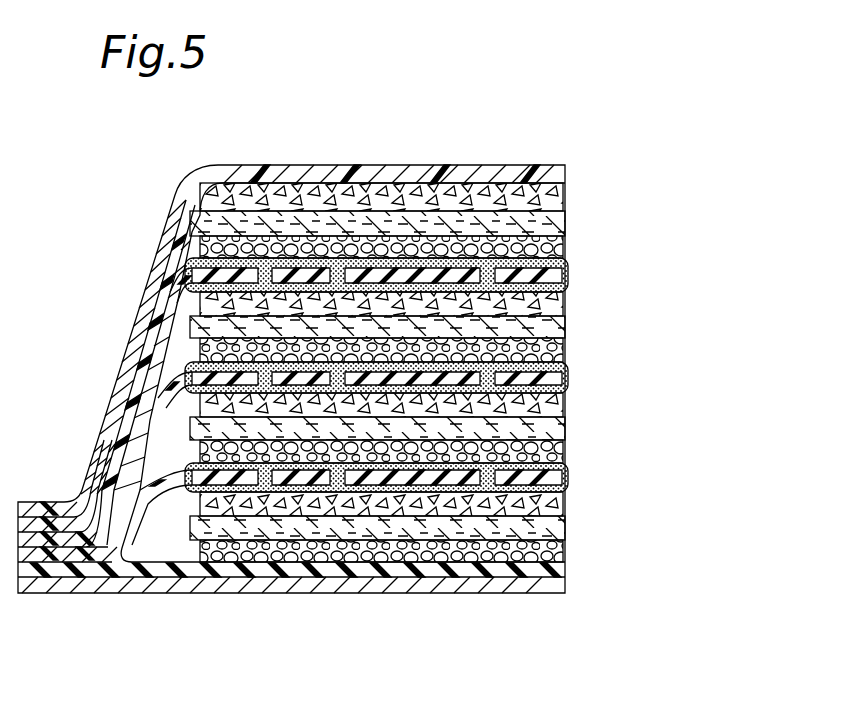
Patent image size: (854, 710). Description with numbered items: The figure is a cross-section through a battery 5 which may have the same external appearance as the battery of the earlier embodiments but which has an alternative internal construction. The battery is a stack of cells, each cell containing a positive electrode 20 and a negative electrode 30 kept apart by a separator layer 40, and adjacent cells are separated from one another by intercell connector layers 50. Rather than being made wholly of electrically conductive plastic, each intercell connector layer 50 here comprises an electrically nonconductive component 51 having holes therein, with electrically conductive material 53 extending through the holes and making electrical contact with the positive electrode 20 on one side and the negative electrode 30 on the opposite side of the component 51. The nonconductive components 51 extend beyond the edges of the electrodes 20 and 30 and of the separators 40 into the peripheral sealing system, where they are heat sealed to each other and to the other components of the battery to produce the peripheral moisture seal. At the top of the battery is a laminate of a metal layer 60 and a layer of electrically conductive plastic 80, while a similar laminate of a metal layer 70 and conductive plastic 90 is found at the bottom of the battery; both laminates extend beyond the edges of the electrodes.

The battery 5 is at (412, 368).
The positive electrode 20 is at (565, 201).
The negative electrode 30 is at (565, 250).
The separator layer 40 is at (565, 223).
The intercell connector layer 50 is at (568, 365).
The electrically nonconductive component 51 is at (570, 279).
The electrically conductive material 53 is at (568, 262).
The metal layer 60 is at (566, 170).
The metal layer 70 is at (565, 583).
The electrically conductive plastic layer 80 is at (565, 181).
The electrically conductive plastic layer 90 is at (565, 571).